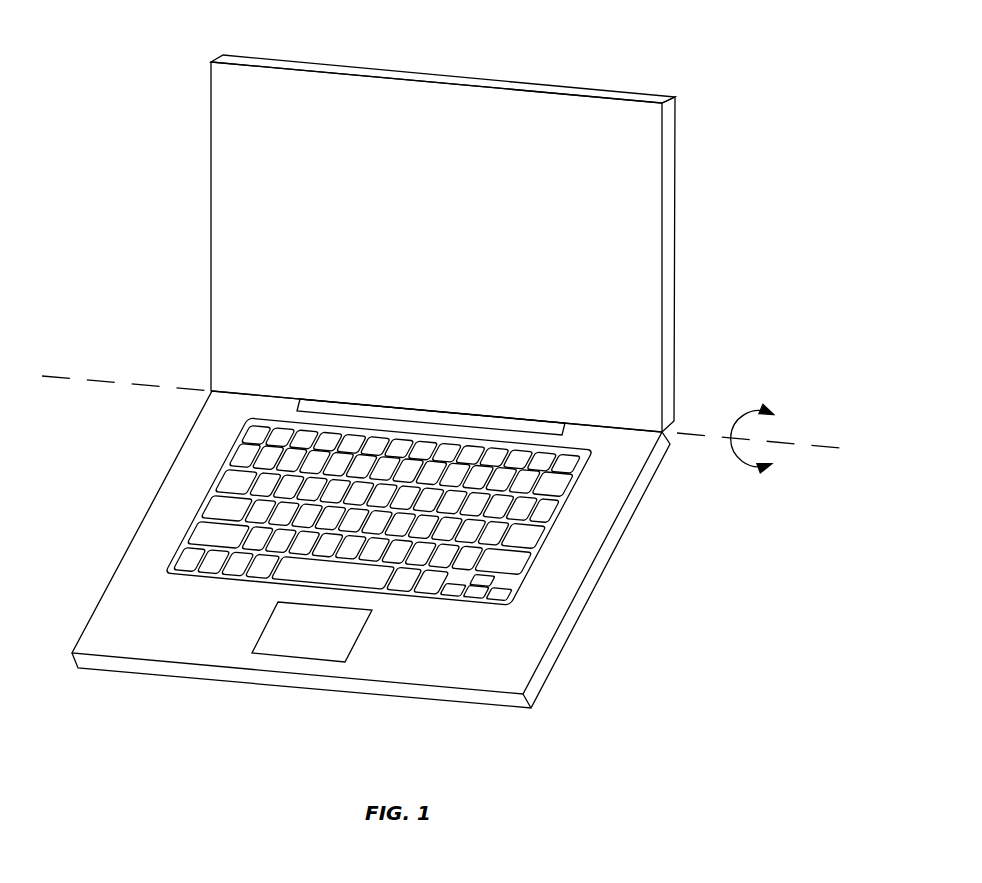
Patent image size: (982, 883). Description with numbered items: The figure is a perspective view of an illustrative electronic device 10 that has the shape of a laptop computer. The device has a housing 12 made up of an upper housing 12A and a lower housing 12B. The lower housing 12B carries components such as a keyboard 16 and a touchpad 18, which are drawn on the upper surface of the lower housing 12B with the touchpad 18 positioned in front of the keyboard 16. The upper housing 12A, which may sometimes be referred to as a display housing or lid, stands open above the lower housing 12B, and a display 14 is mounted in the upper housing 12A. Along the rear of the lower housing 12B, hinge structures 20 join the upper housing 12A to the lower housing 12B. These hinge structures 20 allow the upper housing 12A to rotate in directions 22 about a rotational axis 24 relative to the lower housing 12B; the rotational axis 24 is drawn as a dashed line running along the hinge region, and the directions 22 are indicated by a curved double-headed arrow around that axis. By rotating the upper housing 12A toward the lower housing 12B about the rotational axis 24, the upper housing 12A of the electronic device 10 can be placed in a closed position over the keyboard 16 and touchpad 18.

The electronic device 10 is at (728, 65).
The housing 12 is at (676, 327).
The upper housing 12A is at (196, 64).
The lower housing 12B is at (190, 395).
The display 14 is at (582, 235).
The keyboard 16 is at (548, 543).
The touchpad 18 is at (320, 663).
The hinge structures 20 is at (533, 422).
The directions 22 is at (755, 474).
The rotational axis 24 is at (60, 373).